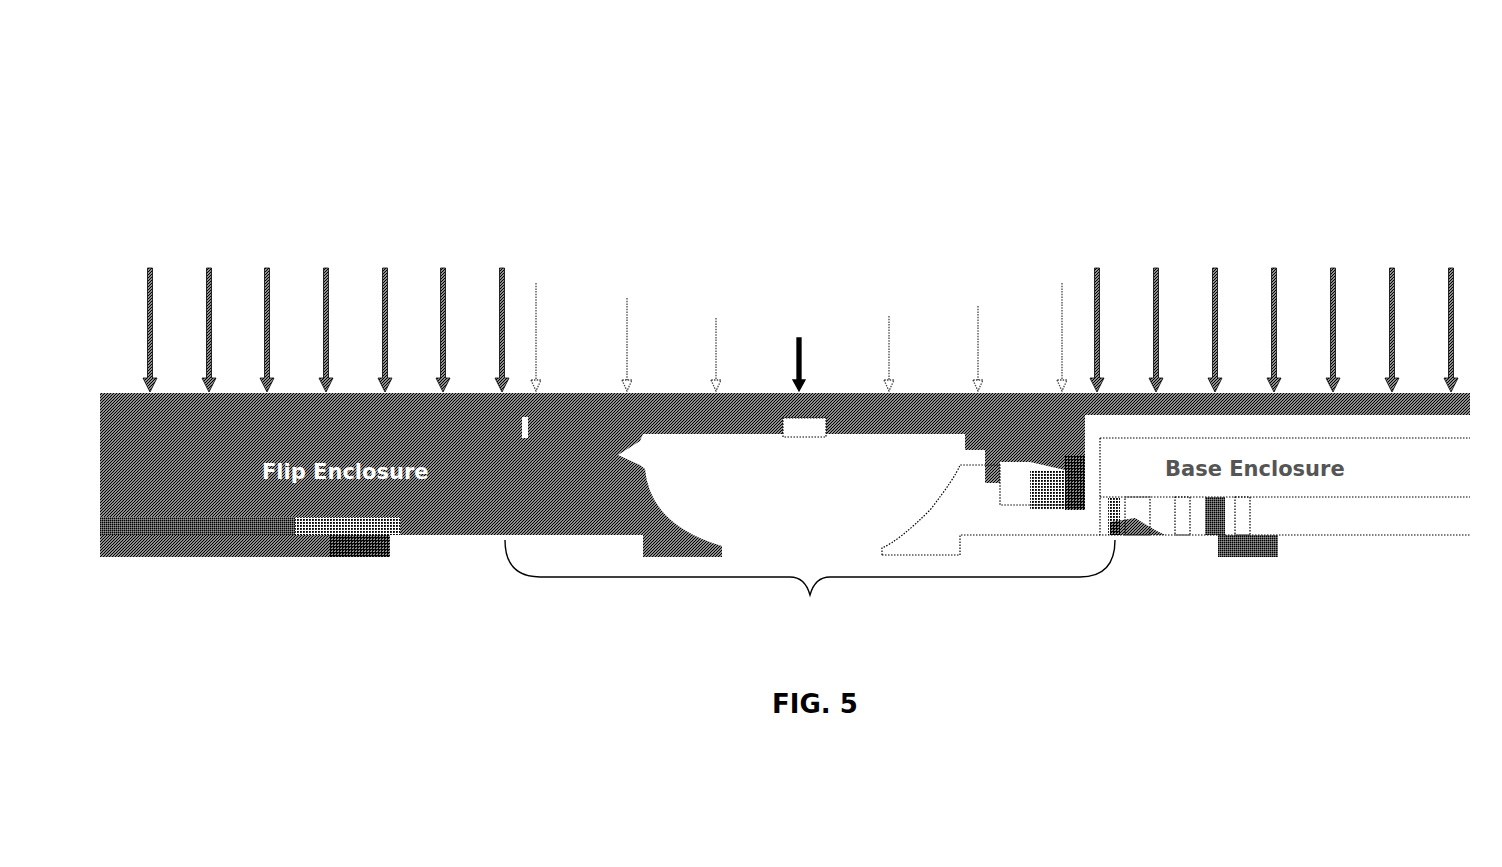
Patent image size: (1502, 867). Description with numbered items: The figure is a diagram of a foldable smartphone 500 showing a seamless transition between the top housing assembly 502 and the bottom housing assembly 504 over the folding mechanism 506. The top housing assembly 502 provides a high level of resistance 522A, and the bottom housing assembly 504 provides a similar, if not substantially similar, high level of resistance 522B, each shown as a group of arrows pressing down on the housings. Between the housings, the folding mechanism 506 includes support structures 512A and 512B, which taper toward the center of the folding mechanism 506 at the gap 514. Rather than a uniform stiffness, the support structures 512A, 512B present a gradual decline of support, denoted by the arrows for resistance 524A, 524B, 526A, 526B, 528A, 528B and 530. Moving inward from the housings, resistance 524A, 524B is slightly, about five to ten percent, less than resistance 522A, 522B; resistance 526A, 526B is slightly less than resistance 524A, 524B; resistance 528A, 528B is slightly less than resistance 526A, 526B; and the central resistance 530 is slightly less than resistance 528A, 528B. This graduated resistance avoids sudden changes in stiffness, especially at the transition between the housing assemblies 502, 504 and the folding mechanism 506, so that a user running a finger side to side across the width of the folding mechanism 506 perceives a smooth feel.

The foldable smartphone 500 is at (1228, 133).
The top housing assembly 502 is at (280, 558).
The bottom housing assembly 504 is at (1245, 552).
The folding mechanism 506 is at (810, 583).
The support structure 512A is at (660, 425).
The support structure 512B is at (950, 428).
The gap 514 is at (803, 440).
The resistance 522A is at (522, 283).
The resistance 522B is at (1470, 283).
The resistance 524A is at (537, 283).
The resistance 524B is at (1062, 283).
The resistance 526A is at (627, 298).
The resistance 526B is at (978, 306).
The resistance 528A is at (716, 318).
The resistance 528B is at (889, 316).
The resistance 530 is at (800, 338).